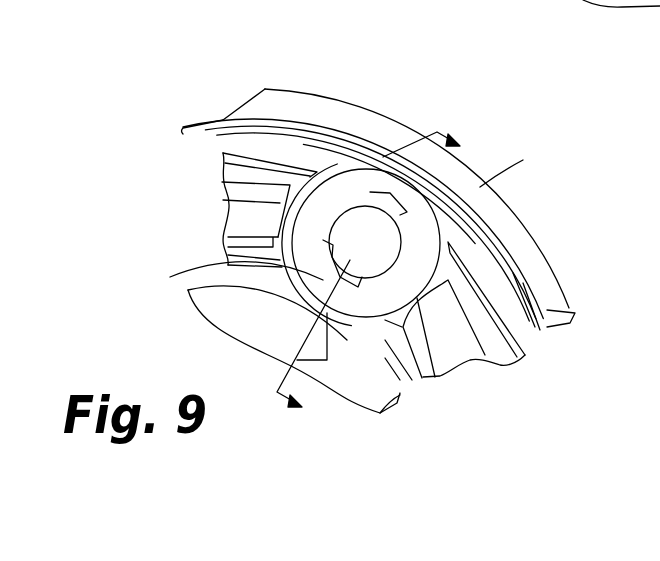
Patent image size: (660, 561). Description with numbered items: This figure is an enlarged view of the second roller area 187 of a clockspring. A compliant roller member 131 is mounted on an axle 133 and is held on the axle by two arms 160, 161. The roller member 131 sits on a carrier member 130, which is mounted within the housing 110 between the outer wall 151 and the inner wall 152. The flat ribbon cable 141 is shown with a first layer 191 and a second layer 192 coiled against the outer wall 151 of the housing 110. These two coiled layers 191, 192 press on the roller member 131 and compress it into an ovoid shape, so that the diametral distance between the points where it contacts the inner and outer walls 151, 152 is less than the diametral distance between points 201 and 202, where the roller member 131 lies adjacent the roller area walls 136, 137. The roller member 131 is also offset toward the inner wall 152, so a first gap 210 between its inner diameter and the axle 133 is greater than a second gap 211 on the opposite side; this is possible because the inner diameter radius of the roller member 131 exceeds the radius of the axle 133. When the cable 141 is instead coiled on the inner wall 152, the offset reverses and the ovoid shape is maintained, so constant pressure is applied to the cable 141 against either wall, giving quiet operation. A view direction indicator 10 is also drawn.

The housing 110 is at (282, 186).
The carrier member 130 is at (282, 124).
The flat ribbon cable 141 is at (220, 120).
The first layer 191 is at (497, 237).
The second layer 192 is at (513, 273).
The outer wall 151 is at (547, 312).
The arm 161 is at (480, 187).
The second roller area 187 is at (350, 190).
The axle 133 is at (380, 255).
The second gap 211 is at (385, 213).
The direction arrow 10 is at (387, 280).
The point 202 is at (224, 192).
The roller area wall 136 is at (226, 218).
The first gap 210 is at (230, 241).
The arm 160 is at (232, 264).
The roller member 131 is at (262, 348).
The inner wall 152 is at (383, 413).
The point 201 is at (487, 358).
The roller area wall 137 is at (452, 370).